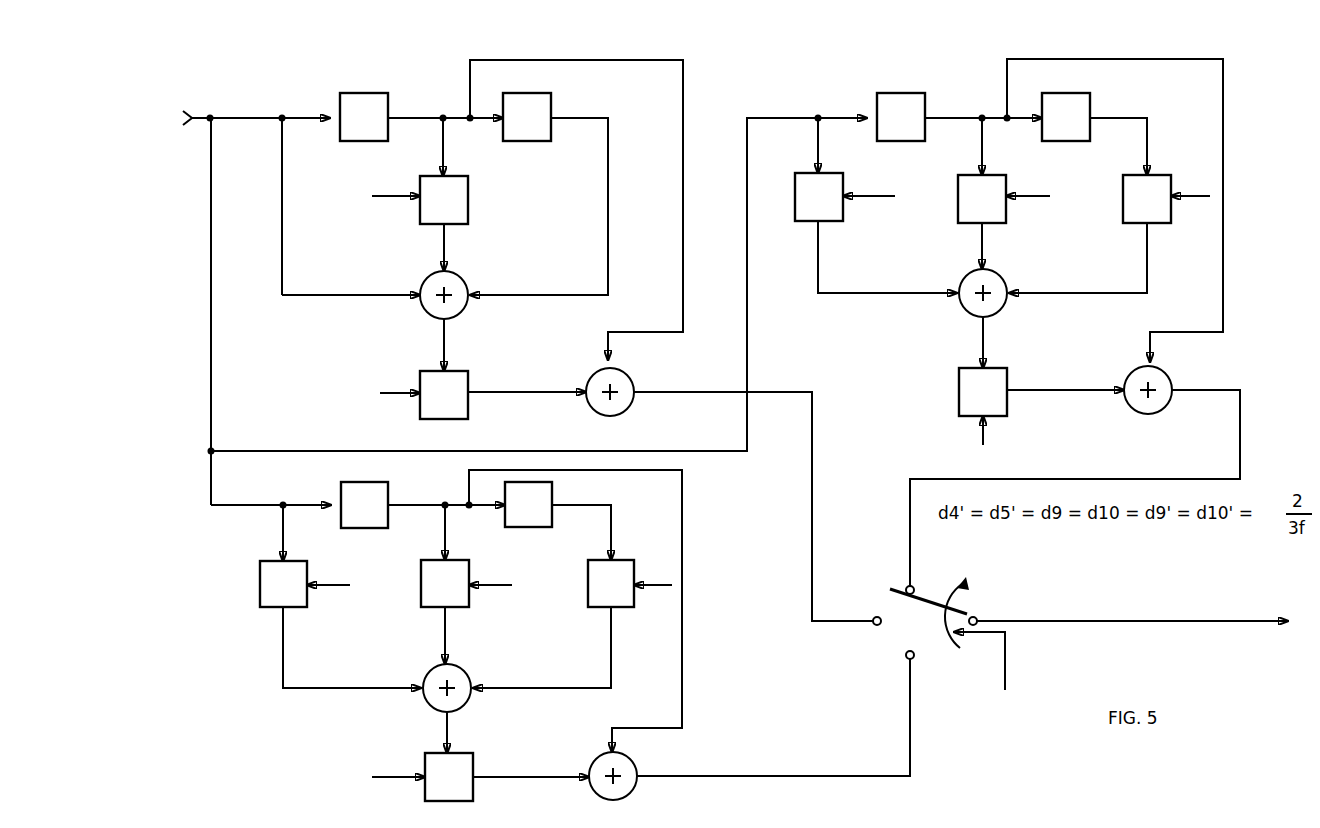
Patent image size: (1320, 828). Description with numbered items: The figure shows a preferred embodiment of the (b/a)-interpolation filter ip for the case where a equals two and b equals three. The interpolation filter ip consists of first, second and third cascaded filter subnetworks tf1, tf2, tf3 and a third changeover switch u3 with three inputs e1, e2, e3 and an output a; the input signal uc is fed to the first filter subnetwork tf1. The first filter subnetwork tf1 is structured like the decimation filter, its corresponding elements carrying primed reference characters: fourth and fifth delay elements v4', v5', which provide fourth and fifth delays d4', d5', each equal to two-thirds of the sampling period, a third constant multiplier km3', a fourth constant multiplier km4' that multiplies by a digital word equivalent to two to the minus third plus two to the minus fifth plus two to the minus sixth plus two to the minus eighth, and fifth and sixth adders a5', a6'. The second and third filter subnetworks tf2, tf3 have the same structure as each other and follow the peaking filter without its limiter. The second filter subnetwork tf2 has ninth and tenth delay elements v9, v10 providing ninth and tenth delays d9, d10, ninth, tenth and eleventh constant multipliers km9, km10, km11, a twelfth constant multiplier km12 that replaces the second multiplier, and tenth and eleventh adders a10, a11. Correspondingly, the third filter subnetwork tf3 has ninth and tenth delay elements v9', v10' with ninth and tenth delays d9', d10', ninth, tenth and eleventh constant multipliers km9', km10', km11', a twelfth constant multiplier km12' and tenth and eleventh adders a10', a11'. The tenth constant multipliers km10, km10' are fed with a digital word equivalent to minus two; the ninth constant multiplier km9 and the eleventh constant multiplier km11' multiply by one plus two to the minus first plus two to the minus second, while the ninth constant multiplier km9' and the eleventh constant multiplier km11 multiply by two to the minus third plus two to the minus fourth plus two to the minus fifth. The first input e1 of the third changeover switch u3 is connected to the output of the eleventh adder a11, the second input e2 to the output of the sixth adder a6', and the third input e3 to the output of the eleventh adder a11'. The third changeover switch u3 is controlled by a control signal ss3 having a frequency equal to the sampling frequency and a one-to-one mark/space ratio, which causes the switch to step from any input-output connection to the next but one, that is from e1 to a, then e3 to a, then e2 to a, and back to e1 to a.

The first filter subnetwork tf1 is at (322, 351).
The second filter subnetwork tf2 is at (886, 351).
The third filter subnetwork tf3 is at (332, 738).
The input signal uc is at (256, 106).
The fourth delay element v4' is at (365, 101).
The fourth delay d4' is at (364, 117).
The fifth delay element v5' is at (530, 101).
The fifth delay d5' is at (527, 117).
The third constant multiplier km3' is at (476, 200).
The fourth constant multiplier km4' is at (473, 387).
The fifth adder a5' is at (462, 286).
The sixth adder a6' is at (627, 385).
The ninth delay element v9 is at (902, 101).
The ninth delay d9 is at (901, 117).
The tenth delay element v10 is at (1072, 101).
The tenth delay d10 is at (1066, 117).
The ninth constant multiplier km9 is at (841, 183).
The tenth constant multiplier km10 is at (1010, 184).
The eleventh constant multiplier km11 is at (1175, 184).
The twelfth constant multiplier km12 is at (1012, 378).
The tenth adder a10 is at (1003, 286).
The eleventh adder a11 is at (1168, 385).
The ninth delay element v9' is at (369, 490).
The ninth delay d9' is at (364, 505).
The tenth delay element v10' is at (557, 502).
The tenth delay d10' is at (528, 504).
The ninth constant multiplier km9' is at (307, 570).
The tenth constant multiplier km10' is at (477, 570).
The eleventh constant multiplier km11' is at (641, 570).
The twelfth constant multiplier km12' is at (482, 765).
The tenth adder a10' is at (469, 681).
The eleventh adder a11' is at (635, 770).
The (b/a)-interpolation filter ip is at (1088, 577).
The first input e1 is at (923, 581).
The second input e2 is at (864, 610).
The third input e3 is at (890, 655).
The output a is at (1128, 610).
The third changeover switch u3 is at (947, 625).
The control signal ss3 is at (983, 674).